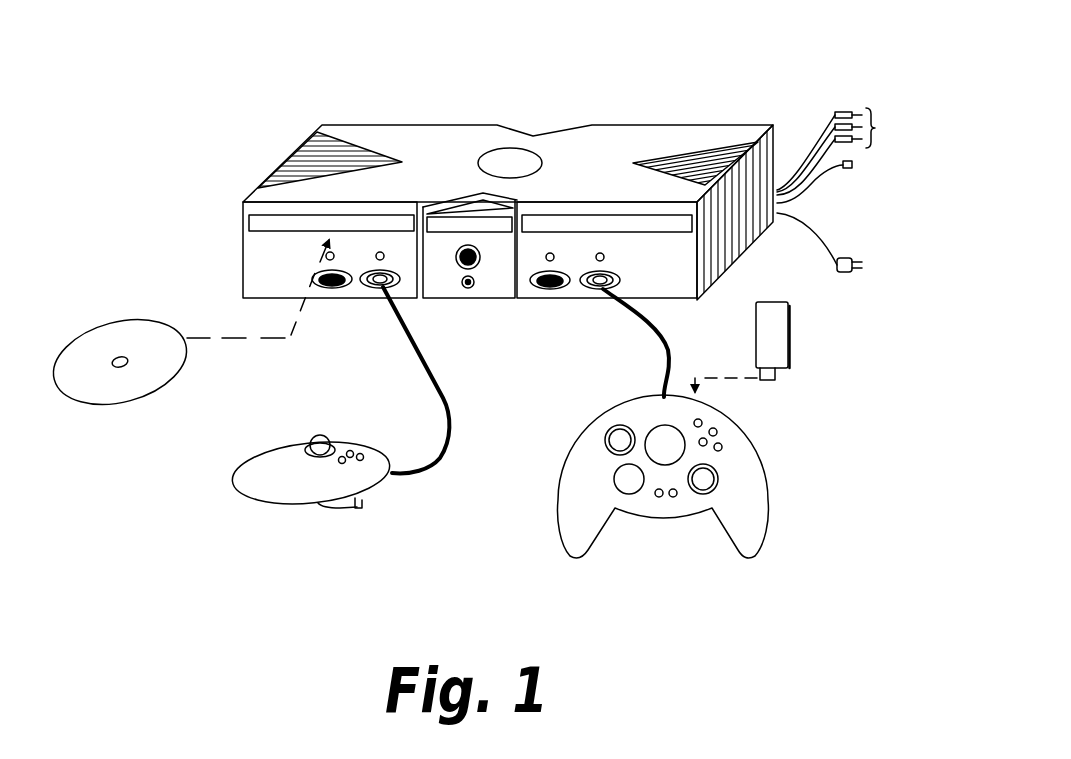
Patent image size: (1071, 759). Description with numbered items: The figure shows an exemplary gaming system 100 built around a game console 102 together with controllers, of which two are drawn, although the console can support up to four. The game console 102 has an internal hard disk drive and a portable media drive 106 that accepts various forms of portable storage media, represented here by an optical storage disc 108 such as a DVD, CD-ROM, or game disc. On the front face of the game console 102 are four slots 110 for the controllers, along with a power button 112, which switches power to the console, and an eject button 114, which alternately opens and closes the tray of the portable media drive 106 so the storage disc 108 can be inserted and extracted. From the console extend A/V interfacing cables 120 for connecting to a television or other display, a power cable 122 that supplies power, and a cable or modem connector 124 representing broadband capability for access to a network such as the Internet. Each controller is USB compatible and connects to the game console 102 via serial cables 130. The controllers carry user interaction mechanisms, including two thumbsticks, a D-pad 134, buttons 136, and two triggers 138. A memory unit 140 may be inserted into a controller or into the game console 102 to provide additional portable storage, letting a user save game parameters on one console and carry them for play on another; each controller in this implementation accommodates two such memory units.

The gaming system 100 is at (664, 42).
The game console 102 is at (360, 123).
The portable media drive 106 is at (258, 222).
The optical storage disc 108 is at (137, 400).
The slots 110 is at (380, 287).
The power button 112 is at (470, 289).
The eject button 114 is at (468, 245).
The A/V interfacing cables 120 is at (843, 112).
The power cable 122 is at (842, 273).
The cable or modem connector 124 is at (815, 182).
The serial cables 130 is at (446, 386).
The D-pad 134 is at (613, 480).
The buttons 136 is at (722, 432).
The triggers 138 is at (360, 504).
The memory unit 140 is at (788, 333).